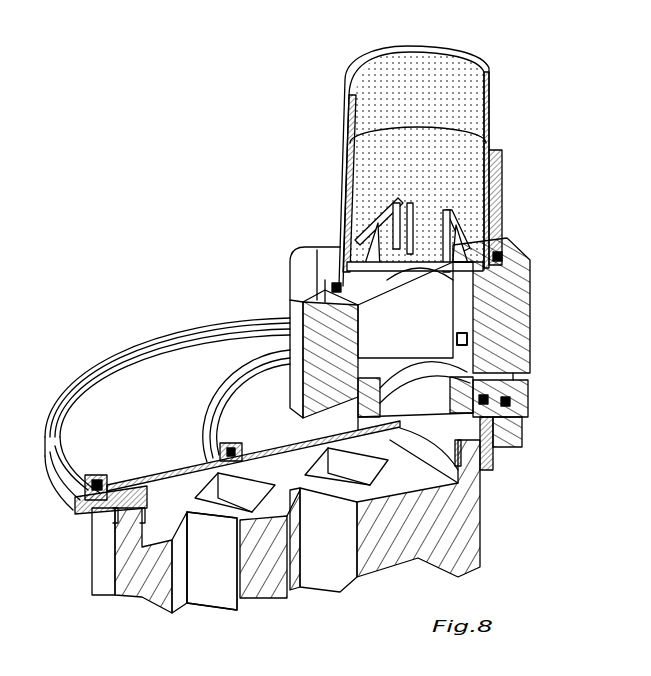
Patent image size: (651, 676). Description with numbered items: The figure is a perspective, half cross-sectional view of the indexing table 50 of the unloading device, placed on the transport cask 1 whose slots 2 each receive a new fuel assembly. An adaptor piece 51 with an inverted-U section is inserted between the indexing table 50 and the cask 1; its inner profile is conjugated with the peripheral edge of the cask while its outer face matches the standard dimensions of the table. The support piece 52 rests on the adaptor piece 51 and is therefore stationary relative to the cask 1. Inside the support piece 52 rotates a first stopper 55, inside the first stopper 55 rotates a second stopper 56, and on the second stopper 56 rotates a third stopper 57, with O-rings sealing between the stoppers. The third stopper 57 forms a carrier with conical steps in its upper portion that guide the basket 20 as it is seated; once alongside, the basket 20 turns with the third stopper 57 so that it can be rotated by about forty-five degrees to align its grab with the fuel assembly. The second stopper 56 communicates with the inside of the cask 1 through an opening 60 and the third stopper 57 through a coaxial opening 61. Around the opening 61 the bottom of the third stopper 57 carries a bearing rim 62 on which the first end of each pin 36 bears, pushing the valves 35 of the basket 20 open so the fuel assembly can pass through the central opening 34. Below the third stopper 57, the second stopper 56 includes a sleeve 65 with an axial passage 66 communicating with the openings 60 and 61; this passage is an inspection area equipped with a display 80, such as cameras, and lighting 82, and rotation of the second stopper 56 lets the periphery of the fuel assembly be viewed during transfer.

The transport cask 1 is at (318, 546).
The slots 2 is at (217, 563).
The basket 20 is at (497, 61).
The central opening 34 is at (425, 282).
The valves 35 is at (345, 177).
The pin 36 is at (362, 238).
The indexing table 50 is at (407, 342).
The adaptor piece 51 is at (130, 510).
The support piece 52 is at (92, 520).
The first stopper 55 is at (138, 415).
The second stopper 56 is at (268, 412).
The third stopper 57 is at (502, 152).
The opening 60 is at (447, 471).
The opening 61 is at (533, 295).
The bearing rim 62 is at (293, 293).
The sleeve 65 is at (517, 363).
The axial passage 66 is at (467, 336).
The display 80 is at (468, 342).
The lighting 82 is at (462, 339).